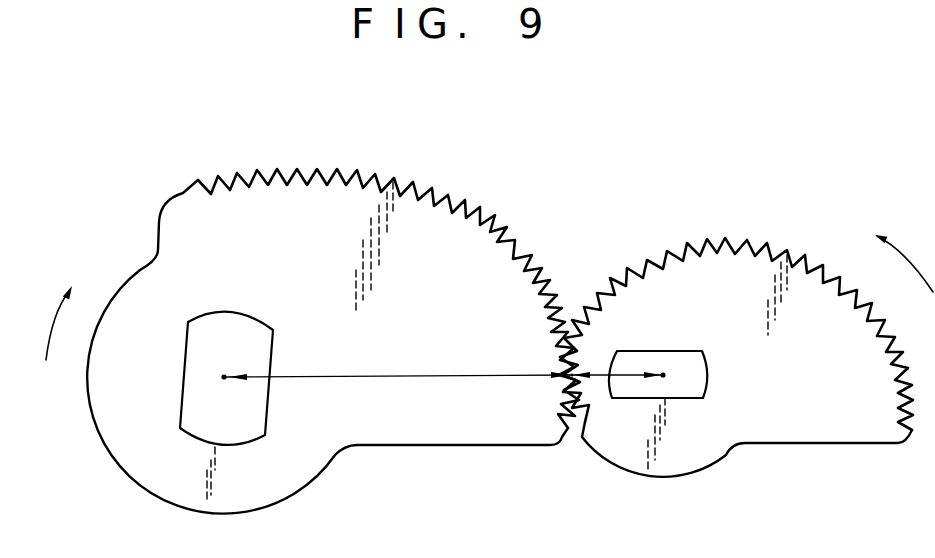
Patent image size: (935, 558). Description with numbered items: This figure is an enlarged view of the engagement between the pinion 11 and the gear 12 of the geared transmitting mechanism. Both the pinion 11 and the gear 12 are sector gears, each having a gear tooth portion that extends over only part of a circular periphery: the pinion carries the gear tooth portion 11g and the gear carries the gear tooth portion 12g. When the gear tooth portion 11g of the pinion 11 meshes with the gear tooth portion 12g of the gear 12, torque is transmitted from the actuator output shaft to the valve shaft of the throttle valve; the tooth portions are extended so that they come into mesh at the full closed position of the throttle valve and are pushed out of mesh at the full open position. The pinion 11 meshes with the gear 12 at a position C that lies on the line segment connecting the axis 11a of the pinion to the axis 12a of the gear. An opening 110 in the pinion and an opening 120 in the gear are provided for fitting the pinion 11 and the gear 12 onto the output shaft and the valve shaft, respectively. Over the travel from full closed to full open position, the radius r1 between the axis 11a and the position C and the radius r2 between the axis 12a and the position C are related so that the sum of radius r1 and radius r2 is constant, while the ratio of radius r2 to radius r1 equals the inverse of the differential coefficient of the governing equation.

The gear 12 is at (290, 477).
The gear tooth portion of the gear 12g is at (262, 177).
The opening 120 is at (187, 335).
The axis of the gear 12a is at (224, 381).
The pinion 11 is at (830, 422).
The gear tooth portion of the pinion 11g is at (757, 248).
The opening 110 is at (688, 351).
The axis of the pinion 11a is at (665, 378).
The meshing position C is at (578, 393).
The radius r1 is at (616, 360).
The radius r2 is at (397, 364).